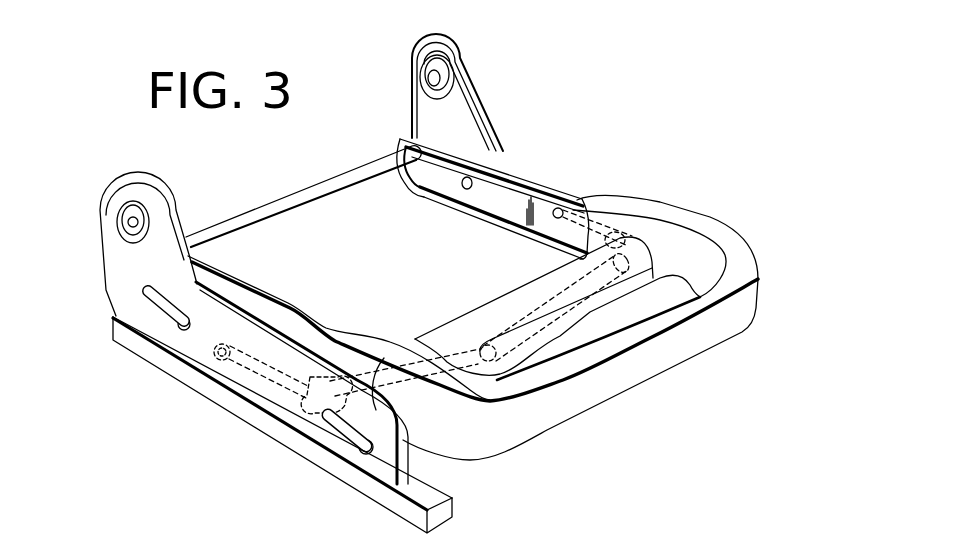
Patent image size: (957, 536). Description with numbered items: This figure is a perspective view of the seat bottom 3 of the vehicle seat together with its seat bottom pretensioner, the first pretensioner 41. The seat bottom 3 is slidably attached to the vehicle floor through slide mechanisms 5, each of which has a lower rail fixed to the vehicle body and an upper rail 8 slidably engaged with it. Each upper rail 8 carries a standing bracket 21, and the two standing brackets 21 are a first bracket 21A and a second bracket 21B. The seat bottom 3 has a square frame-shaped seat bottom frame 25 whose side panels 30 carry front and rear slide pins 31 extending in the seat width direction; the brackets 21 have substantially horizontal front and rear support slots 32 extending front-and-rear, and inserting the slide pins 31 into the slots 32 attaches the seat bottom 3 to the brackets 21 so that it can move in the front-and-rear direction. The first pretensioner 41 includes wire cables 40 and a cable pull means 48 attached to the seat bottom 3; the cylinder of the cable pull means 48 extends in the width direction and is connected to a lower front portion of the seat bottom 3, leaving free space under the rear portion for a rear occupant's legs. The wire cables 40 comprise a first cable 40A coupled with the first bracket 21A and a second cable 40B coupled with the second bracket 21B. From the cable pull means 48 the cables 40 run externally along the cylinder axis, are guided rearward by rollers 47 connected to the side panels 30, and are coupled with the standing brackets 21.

The seat bottom 3 is at (627, 381).
The slide mechanism 5 is at (282, 425).
The upper rail 8 is at (317, 485).
The standing bracket 21 is at (345, 175).
The first bracket 21A is at (467, 82).
The second bracket 21B is at (233, 310).
The seat bottom frame 25 is at (685, 220).
The side panel 30 is at (522, 173).
The slide pin 31 is at (475, 167).
The support slot 32 is at (140, 290).
The wire cable 40 is at (399, 297).
The first cable 40A is at (613, 207).
The second cable 40B is at (237, 363).
The first pretensioner 41 is at (523, 330).
The roller 47 is at (582, 258).
The cable pull means 48 is at (500, 345).